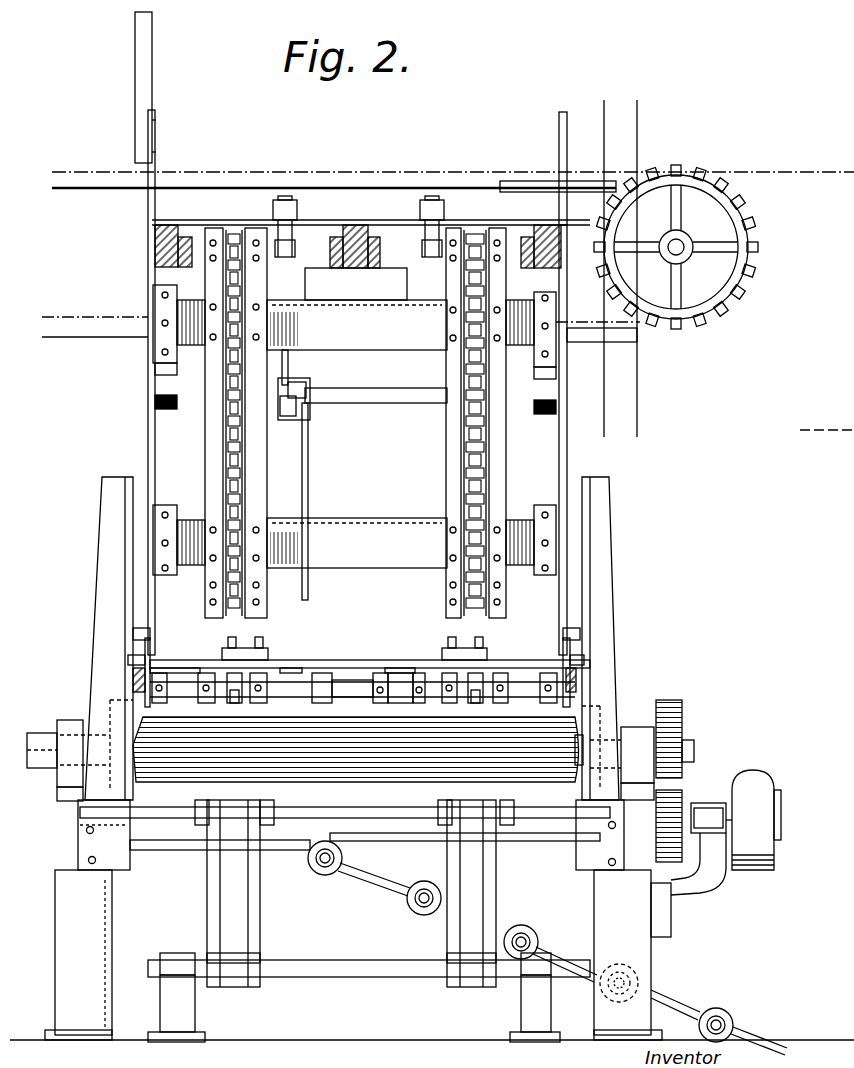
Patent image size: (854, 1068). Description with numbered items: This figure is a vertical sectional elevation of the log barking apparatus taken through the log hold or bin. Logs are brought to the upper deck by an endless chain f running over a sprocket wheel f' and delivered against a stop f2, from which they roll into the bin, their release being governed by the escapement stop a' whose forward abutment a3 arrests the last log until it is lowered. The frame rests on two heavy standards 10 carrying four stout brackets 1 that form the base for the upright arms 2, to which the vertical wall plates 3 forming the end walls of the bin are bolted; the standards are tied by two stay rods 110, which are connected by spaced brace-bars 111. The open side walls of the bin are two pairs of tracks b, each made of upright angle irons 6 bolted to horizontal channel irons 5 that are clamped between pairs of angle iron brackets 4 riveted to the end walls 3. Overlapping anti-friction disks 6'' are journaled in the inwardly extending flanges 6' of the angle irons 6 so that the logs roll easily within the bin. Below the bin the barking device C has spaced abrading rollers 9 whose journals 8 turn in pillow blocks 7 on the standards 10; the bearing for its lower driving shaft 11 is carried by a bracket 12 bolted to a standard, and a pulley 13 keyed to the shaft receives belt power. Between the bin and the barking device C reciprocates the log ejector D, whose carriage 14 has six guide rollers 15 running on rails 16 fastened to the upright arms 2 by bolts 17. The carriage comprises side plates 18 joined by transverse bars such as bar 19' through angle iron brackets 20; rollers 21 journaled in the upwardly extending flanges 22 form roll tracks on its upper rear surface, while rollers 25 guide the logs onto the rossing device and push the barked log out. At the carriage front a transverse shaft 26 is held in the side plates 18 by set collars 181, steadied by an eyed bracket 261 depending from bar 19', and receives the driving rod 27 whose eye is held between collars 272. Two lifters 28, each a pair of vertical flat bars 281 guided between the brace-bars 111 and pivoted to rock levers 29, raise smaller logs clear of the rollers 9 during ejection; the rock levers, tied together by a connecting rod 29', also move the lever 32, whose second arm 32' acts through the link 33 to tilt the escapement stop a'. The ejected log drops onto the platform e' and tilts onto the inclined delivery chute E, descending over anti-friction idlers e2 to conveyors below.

The endless chain f is at (453, 171).
The sprocket wheel f' is at (676, 247).
The stop f2 is at (559, 136).
The stop a3 is at (297, 203).
The escapement stop a' is at (358, 251).
The wall plate 3 is at (148, 436).
The angle iron 6 is at (352, 423).
The track b is at (246, 452).
The inwardly extending flange 6' is at (352, 515).
The anti-friction roller disk 6'' is at (342, 349).
The horizontal channel iron 5 is at (357, 434).
The angle iron bracket 4 is at (165, 352).
The link 33 is at (288, 362).
The lever 32 is at (313, 402).
The bar 32' is at (374, 494).
The upright arm 2 is at (352, 638).
The guide roller 15 is at (135, 648).
The side plate 18 is at (150, 652).
The rail 16 is at (130, 663).
The bolt 17 is at (133, 680).
The carriage 14 is at (365, 664).
The angle iron bracket 20 is at (162, 676).
The transverse bar 19' is at (298, 653).
The log ejector D is at (362, 686).
The set collar 181 is at (545, 676).
The friction roller 25 is at (250, 705).
The anti-friction roller 21 is at (236, 672).
The upwardly extending flange 22 is at (226, 648).
The eyed bracket 261 is at (322, 673).
The transverse shaft 26 is at (360, 697).
The driving rod 27 is at (399, 688).
The collar 272 is at (398, 670).
The barking device C is at (358, 749).
The pillow block 7 is at (355, 760).
The journal 8 is at (32, 745).
The abrading roller 9 is at (345, 801).
The brace-bar 111 is at (195, 808).
The stay rod 110 is at (424, 822).
The platform e' is at (220, 859).
The bracket 1 is at (351, 835).
The standard 10 is at (353, 955).
The lifter 28 is at (260, 915).
The vertical flat bar 281 is at (235, 898).
The cross bar 29' is at (369, 987).
The rock lever 29 is at (354, 997).
The delivery chute E is at (562, 959).
The anti-friction roller e2 is at (338, 850).
The driving shaft 11 is at (695, 812).
The bracket 12 is at (700, 893).
The pulley 13 is at (753, 820).